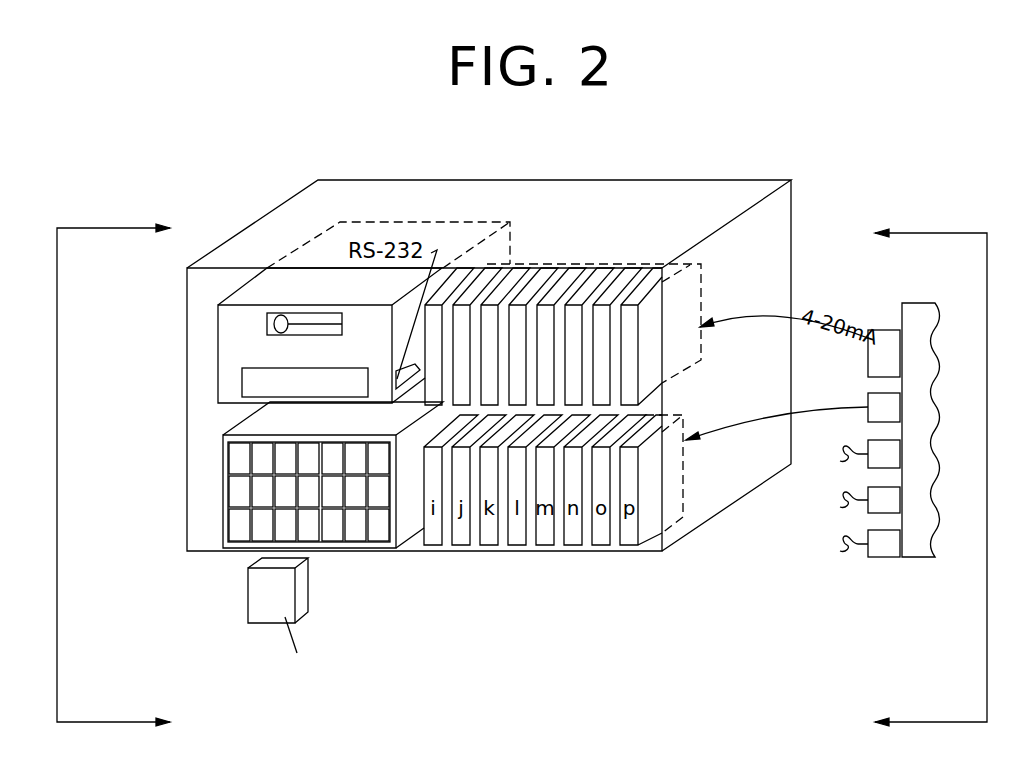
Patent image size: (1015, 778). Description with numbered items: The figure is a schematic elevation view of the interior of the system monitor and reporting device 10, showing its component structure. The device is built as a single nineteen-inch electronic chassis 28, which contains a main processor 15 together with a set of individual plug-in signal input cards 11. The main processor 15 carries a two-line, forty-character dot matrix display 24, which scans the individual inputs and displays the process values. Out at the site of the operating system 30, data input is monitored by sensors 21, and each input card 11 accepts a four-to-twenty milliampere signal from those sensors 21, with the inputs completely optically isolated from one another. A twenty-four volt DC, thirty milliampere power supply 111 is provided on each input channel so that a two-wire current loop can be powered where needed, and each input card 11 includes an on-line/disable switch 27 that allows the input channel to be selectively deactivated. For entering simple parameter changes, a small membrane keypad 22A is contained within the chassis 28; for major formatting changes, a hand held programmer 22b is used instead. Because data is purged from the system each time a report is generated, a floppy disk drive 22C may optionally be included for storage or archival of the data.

The system monitor and reporting device 10 is at (176, 396).
The main processor 15 is at (257, 278).
The floppy disk drive 22C is at (333, 294).
The dot matrix display 24 is at (299, 370).
The on-line/disable switch 27 is at (630, 323).
The signal input cards 11 is at (678, 356).
The electronic chassis 28 is at (776, 286).
The sensors 21 is at (880, 330).
The operating system 30 is at (925, 303).
The power supply 111 is at (223, 519).
The membrane keypad 22A is at (354, 548).
The hand held programmer 22b is at (290, 593).